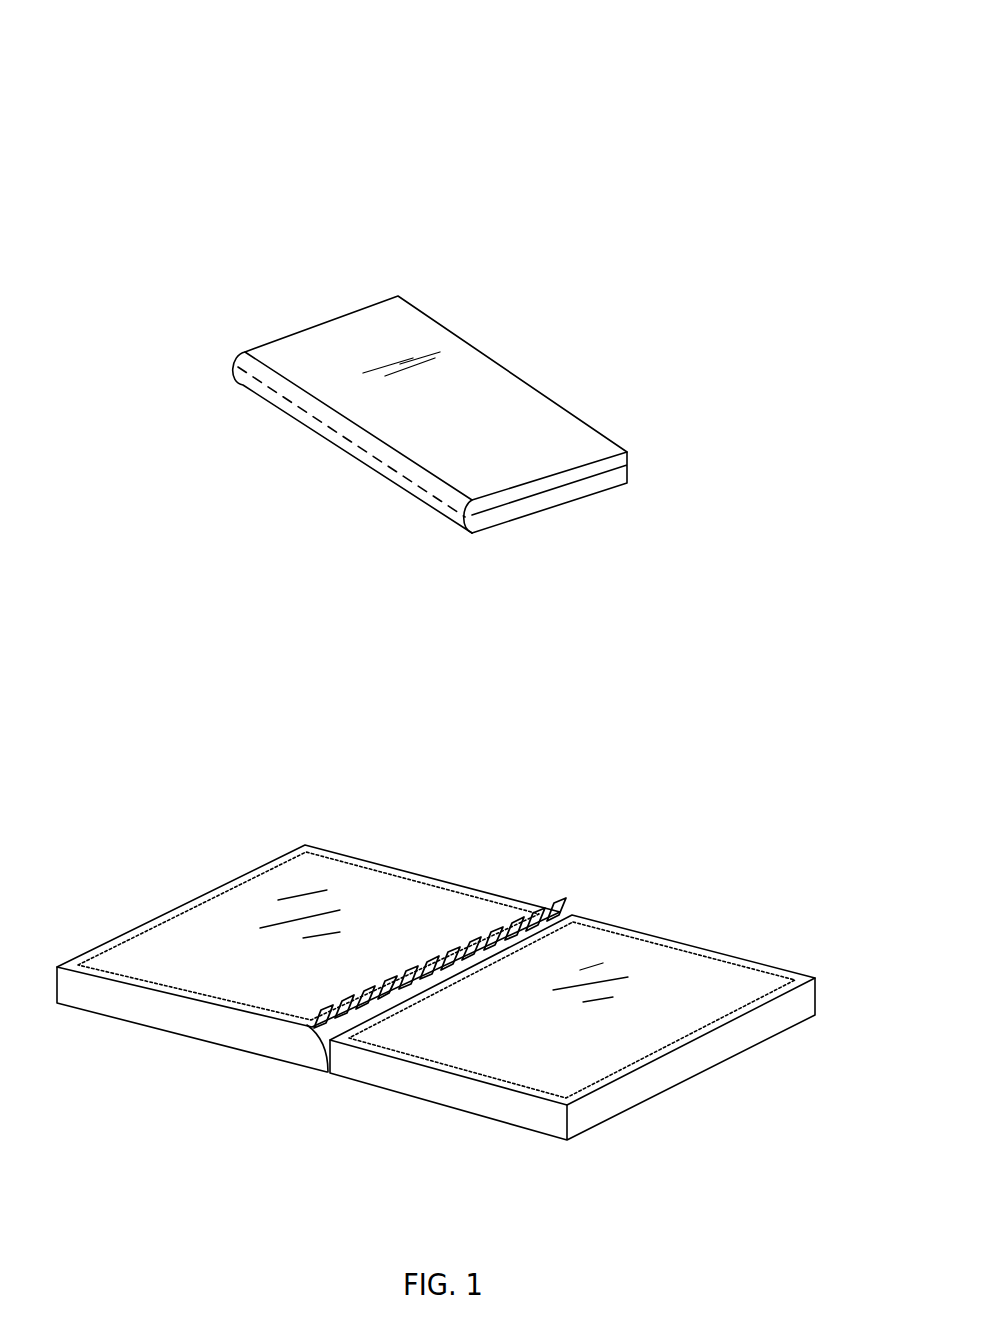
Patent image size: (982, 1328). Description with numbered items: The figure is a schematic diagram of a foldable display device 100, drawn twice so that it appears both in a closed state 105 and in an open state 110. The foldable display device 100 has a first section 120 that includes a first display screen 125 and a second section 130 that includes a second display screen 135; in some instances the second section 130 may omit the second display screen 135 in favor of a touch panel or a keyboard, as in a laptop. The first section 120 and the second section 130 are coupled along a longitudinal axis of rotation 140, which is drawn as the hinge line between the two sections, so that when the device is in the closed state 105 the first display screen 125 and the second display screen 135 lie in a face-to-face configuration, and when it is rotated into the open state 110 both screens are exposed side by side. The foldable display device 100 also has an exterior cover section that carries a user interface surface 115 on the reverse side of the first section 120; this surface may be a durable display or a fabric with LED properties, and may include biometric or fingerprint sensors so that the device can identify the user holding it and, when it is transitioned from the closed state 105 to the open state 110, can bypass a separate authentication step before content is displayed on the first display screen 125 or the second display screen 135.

The foldable display device 100 is at (783, 47).
The closed state 105 is at (497, 285).
The open state 110 is at (179, 868).
The user interface surface 115 is at (500, 400).
The first section 120 is at (555, 480).
The first display screen 125 is at (422, 895).
The second section 130 is at (585, 487).
The second display screen 135 is at (678, 965).
The longitudinal axis of rotation 140 is at (358, 447).